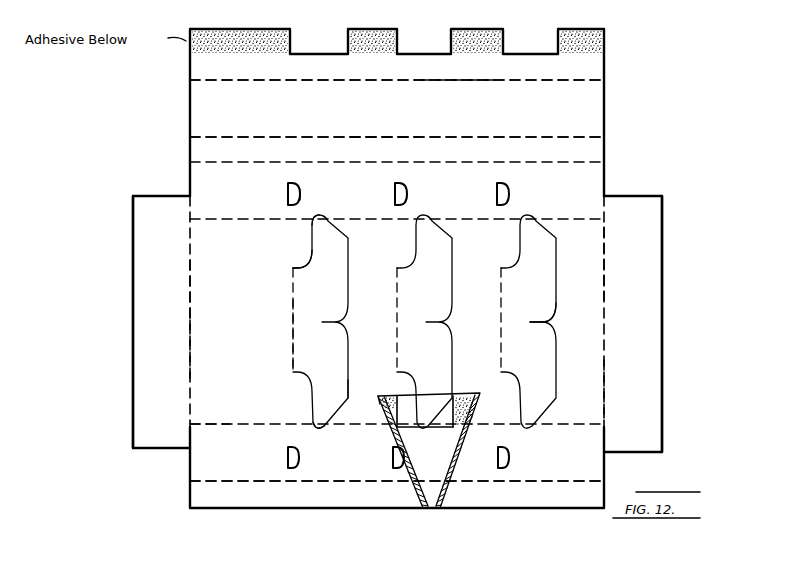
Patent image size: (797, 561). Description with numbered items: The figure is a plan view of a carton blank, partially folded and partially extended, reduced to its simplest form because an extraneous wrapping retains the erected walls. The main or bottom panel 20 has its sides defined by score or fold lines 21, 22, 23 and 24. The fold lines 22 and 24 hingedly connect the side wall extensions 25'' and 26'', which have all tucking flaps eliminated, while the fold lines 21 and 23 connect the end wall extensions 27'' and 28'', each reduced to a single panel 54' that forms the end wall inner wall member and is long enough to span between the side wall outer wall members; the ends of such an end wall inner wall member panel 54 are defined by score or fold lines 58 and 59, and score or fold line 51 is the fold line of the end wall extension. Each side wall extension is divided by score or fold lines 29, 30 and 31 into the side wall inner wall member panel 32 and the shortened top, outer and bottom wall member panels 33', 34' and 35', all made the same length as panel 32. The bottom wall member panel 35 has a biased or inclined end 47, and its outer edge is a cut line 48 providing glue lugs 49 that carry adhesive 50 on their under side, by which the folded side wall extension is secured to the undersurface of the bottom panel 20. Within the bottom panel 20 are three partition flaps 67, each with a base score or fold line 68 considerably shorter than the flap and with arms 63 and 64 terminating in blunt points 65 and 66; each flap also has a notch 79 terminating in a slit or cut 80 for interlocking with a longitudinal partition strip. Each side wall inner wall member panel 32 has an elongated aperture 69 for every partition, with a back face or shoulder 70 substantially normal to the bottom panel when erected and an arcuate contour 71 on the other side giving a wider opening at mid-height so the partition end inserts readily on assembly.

The main or bottom panel 20 is at (482, 285).
The score or fold line 21 is at (190, 358).
The score or fold line 22 is at (466, 226).
The score or fold line 23 is at (602, 381).
The score or fold line 24 is at (213, 434).
The side wall extension 25'' is at (428, 98).
The side wall extension 26'' is at (410, 515).
The end wall extension 27'' is at (105, 285).
The end wall extension 28'' is at (694, 303).
The score or fold line 29 is at (450, 162).
The score or fold line 30 is at (318, 128).
The score or fold line 31 is at (223, 82).
The side wall inner wall member panel 32 is at (549, 168).
The side wall top wall member panel 33' is at (397, 303).
The side wall outer wall member panel 34' is at (385, 319).
The side wall bottom wall member panel 35' is at (460, 89).
The side wall bottom wall member panel 35 is at (384, 422).
The biased or inclined end 47 is at (429, 450).
The cut line 48 is at (533, 56).
The glue lugs or flaps 49 is at (218, 46).
The adhesive 50 is at (267, 42).
The score or fold line 51 is at (135, 251).
The end wall inner wall member panel 54 is at (595, 263).
The end wall inner wall member panel 54' is at (207, 290).
The score or fold line 58 is at (148, 198).
The score or fold line 59 is at (148, 448).
The arm 63 is at (346, 244).
The arm 64 is at (340, 406).
The blunt point 65 is at (322, 217).
The blunt point 66 is at (322, 432).
The partition flap 67 is at (300, 302).
The score or fold line 68 is at (294, 336).
The elongated aperture 69 is at (300, 182).
The back face or shoulder 70 is at (288, 194).
The arcuate contour 71 is at (300, 194).
The notch 79 is at (550, 324).
The slit or cut 80 is at (536, 323).